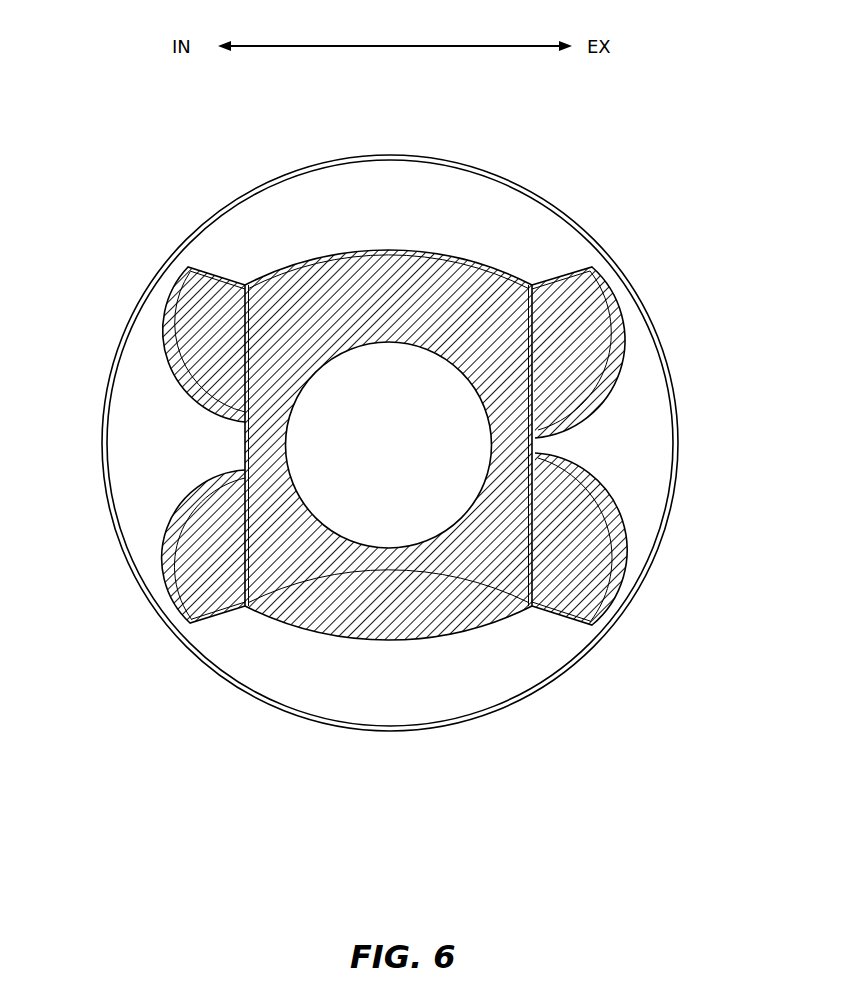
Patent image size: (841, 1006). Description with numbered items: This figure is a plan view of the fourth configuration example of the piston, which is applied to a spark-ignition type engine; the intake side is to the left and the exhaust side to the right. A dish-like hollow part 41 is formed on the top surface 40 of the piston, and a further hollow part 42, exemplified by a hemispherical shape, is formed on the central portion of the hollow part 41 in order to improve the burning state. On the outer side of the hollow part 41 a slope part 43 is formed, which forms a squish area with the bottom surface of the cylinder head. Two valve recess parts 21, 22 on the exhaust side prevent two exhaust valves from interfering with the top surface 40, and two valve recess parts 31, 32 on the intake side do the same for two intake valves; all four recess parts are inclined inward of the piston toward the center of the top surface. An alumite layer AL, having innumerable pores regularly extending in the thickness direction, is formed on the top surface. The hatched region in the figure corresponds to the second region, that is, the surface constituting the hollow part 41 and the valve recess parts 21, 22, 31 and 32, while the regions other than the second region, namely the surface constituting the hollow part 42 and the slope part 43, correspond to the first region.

The top surface 40 is at (548, 202).
The hollow part 41 is at (478, 595).
The hollow part 42 is at (362, 370).
The slope part 43 is at (635, 492).
The valve recess part 21 is at (568, 577).
The valve recess part 22 is at (578, 303).
The valve recess part 31 is at (200, 555).
The valve recess part 32 is at (210, 310).
The alumite layer AL is at (121, 411).